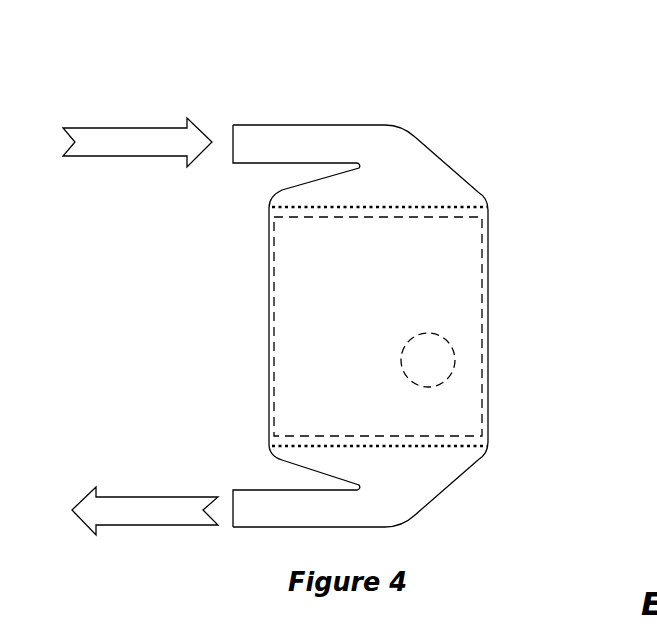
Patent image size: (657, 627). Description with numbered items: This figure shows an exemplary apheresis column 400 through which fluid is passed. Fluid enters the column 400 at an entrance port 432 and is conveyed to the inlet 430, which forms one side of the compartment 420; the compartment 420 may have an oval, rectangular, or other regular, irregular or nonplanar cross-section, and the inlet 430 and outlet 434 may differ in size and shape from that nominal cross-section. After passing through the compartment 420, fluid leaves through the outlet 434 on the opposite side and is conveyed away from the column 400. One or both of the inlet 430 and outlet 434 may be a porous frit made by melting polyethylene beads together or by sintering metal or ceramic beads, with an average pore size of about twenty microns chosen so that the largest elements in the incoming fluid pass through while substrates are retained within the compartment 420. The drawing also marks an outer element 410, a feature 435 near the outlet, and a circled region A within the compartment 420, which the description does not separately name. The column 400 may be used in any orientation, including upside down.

The column 400 is at (264, 94).
The housing 410 is at (480, 190).
The compartment 420 is at (490, 290).
The inlet 430 is at (413, 207).
The entrance port 432 is at (232, 147).
The outlet 434 is at (448, 446).
The fluid outlet 435 is at (232, 507).
The region A is at (452, 372).